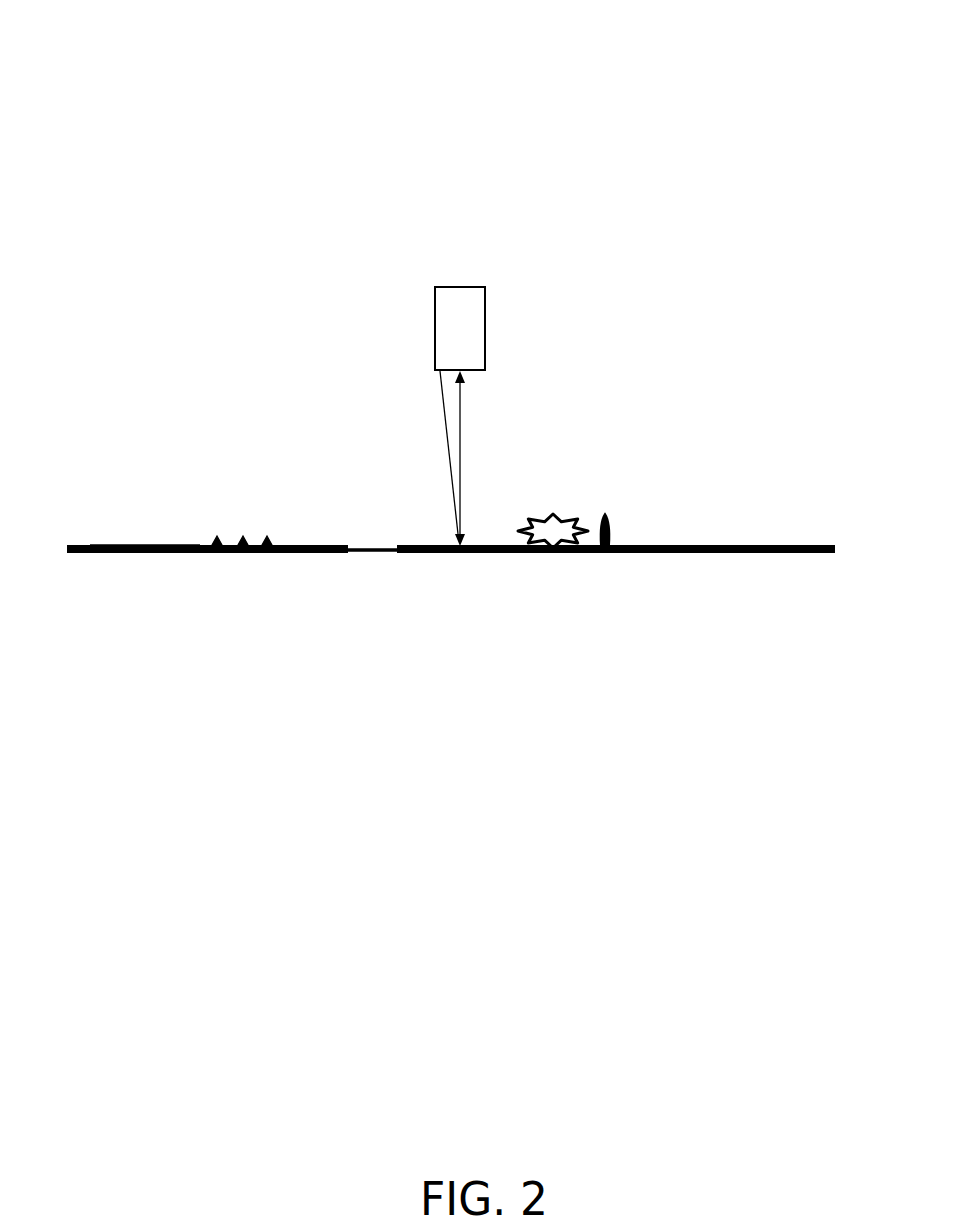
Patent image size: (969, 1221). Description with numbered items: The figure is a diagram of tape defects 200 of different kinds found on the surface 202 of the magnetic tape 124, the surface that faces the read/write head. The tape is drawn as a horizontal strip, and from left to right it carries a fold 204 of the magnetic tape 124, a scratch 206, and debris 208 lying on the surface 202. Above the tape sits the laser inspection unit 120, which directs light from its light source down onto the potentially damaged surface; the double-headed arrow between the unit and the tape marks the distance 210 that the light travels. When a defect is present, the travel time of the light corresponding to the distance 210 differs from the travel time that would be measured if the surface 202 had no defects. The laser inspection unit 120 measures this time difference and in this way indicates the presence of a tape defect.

The tape defects 200 is at (146, 140).
The magnetic tape 124 is at (798, 458).
The surface 202 is at (144, 535).
The fold 204 is at (243, 530).
The scratch 206 is at (377, 536).
The laser inspection unit 120 is at (462, 278).
The distance 210 is at (475, 420).
The debris 208 is at (553, 497).